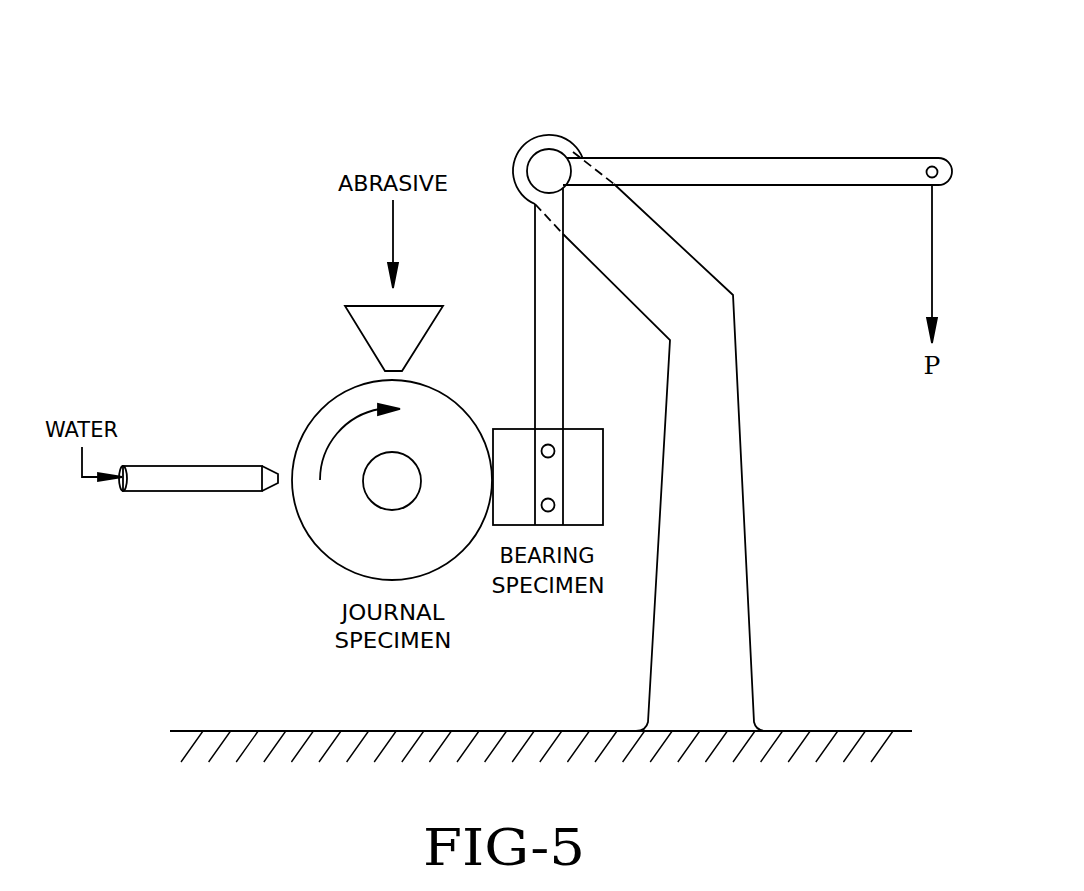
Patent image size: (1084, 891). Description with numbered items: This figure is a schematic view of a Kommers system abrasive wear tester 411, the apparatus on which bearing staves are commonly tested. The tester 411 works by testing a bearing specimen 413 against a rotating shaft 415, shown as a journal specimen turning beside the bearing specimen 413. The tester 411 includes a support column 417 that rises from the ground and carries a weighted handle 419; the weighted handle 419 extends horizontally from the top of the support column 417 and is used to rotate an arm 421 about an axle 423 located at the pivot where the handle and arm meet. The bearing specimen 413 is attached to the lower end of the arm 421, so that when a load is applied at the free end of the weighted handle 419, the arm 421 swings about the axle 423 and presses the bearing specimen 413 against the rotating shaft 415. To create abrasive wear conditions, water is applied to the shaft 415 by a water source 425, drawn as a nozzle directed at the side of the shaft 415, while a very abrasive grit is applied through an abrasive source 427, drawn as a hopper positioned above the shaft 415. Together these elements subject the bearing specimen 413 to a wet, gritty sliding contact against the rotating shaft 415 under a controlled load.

The Kommers system abrasive wear tester 411 is at (913, 445).
The bearing specimen 413 is at (510, 428).
The rotating shaft 415 is at (333, 563).
The support column 417 is at (752, 608).
The weighted handle 419 is at (760, 158).
The arm 421 is at (535, 312).
The axle 423 is at (555, 150).
The water source 425 is at (193, 465).
The abrasive source 427 is at (358, 305).